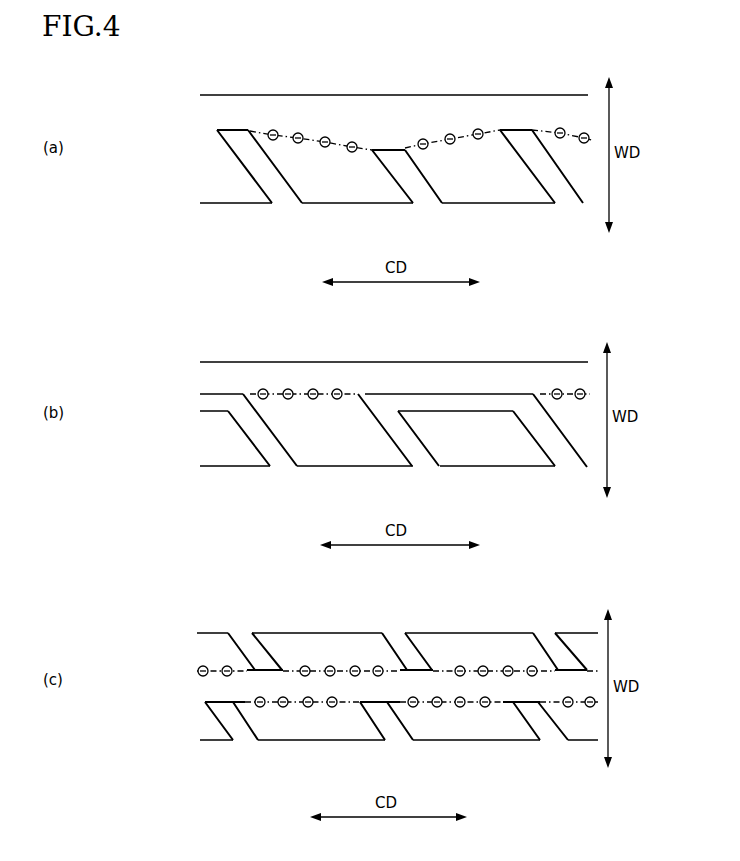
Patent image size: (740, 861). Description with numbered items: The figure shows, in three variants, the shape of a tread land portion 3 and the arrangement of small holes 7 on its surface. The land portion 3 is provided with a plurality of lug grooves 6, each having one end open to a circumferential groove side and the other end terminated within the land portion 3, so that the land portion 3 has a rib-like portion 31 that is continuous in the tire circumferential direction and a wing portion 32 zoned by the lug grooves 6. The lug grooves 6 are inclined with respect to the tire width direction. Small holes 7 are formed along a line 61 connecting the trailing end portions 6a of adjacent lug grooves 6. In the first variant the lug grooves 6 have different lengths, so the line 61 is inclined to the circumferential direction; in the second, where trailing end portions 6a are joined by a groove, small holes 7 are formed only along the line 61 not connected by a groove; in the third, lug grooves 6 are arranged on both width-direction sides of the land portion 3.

The land portion 3 is at (195, 143).
The rib-like portion 31 is at (212, 113).
The wing portion 32 is at (210, 175).
The lug groove 6 is at (278, 196).
The trailing end portion 6a is at (232, 130).
The line 61 is at (287, 124).
The small hole 7 is at (352, 153).